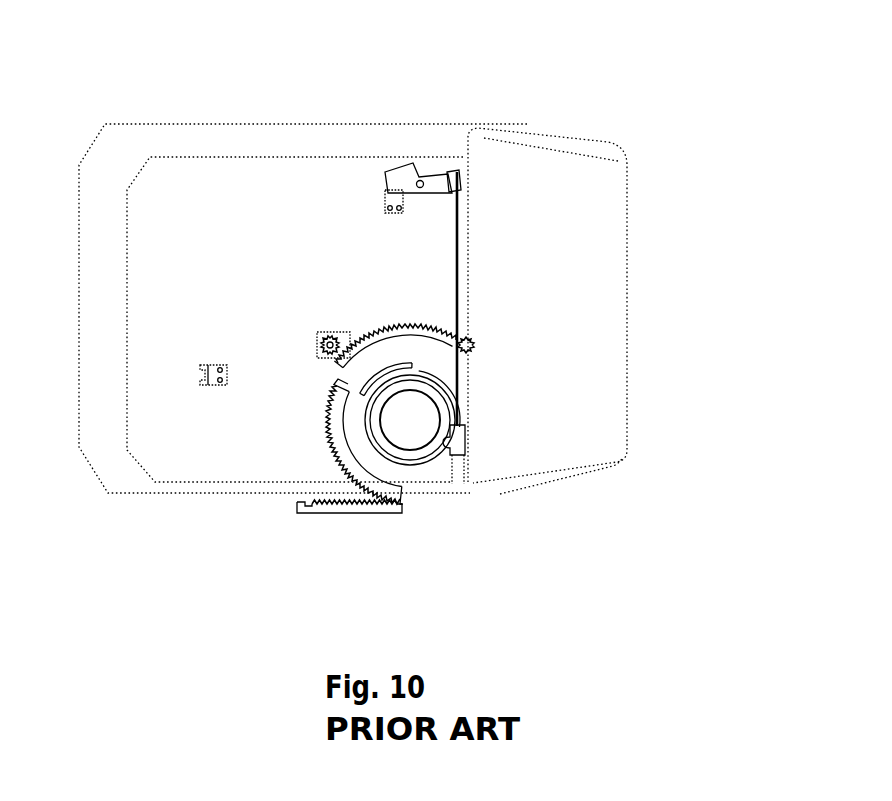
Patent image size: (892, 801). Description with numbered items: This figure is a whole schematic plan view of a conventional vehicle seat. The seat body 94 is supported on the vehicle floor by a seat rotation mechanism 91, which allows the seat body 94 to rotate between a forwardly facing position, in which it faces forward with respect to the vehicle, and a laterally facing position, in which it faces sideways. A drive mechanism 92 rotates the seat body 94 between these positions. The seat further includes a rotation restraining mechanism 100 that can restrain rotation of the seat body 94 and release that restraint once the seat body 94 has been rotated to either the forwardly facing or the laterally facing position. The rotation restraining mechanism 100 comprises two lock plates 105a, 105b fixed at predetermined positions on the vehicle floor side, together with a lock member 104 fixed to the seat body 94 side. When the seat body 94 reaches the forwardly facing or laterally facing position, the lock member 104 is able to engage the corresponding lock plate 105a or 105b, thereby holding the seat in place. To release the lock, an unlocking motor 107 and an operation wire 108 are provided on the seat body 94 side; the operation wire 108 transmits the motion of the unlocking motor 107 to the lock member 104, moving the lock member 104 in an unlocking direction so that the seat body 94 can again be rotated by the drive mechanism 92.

The seat rotation mechanism 91 is at (456, 378).
The drive mechanism 92 is at (356, 334).
The seat body 94 is at (546, 130).
The rotation restraining mechanism 100 is at (392, 122).
The lock member 104 is at (400, 164).
The lock plate 105a is at (385, 203).
The lock plate 105b is at (212, 362).
The unlocking motor 107 is at (455, 462).
The operation wire 108 is at (464, 276).